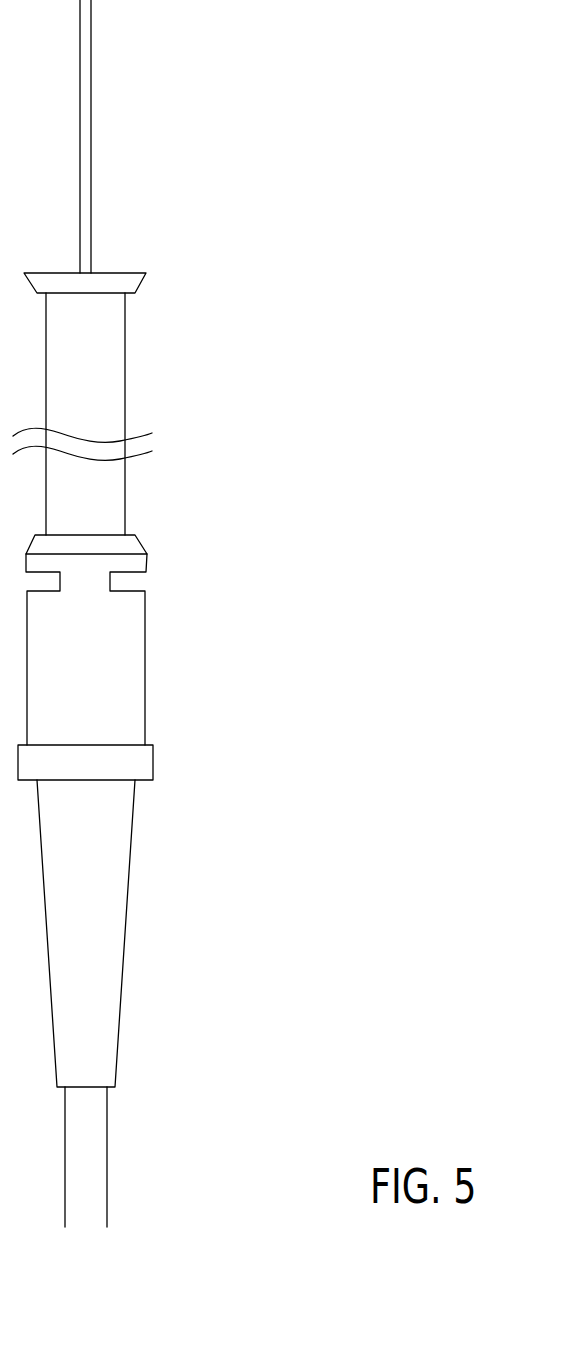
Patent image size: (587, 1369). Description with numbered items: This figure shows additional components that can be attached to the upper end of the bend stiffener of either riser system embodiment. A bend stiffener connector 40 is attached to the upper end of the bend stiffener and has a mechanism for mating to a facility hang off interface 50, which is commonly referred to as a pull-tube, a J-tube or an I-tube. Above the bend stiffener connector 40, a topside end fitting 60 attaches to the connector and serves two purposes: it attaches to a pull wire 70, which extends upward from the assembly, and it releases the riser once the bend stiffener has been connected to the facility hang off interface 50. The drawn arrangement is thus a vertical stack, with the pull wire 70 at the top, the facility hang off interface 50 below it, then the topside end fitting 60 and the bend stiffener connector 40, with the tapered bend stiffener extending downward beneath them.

The pull wire 70 is at (100, 103).
The facility hang off interface 50 is at (125, 368).
The topside end fitting 60 is at (145, 665).
The bend stiffener connector 40 is at (147, 768).